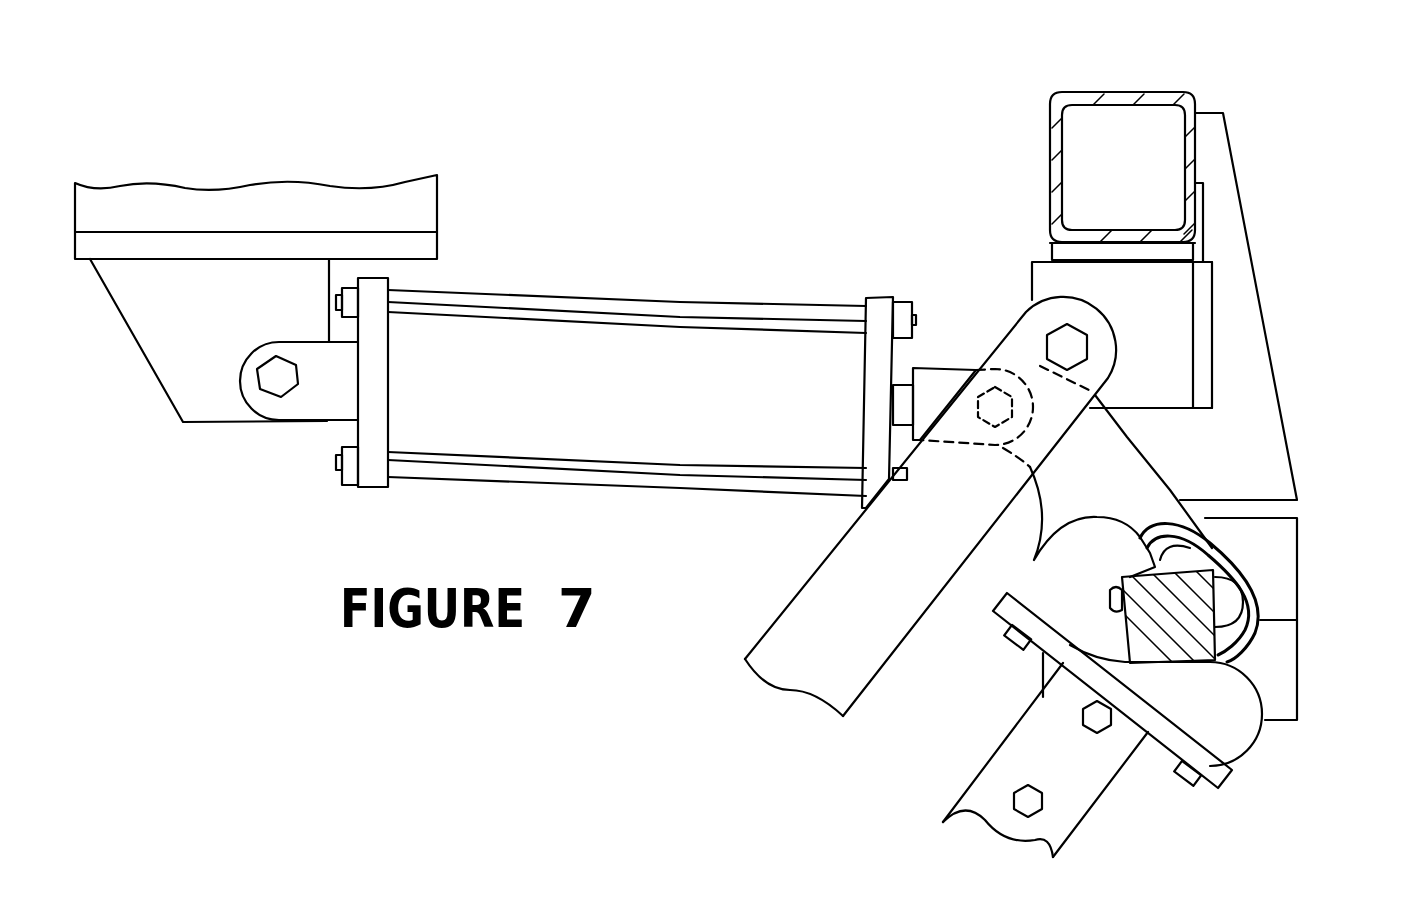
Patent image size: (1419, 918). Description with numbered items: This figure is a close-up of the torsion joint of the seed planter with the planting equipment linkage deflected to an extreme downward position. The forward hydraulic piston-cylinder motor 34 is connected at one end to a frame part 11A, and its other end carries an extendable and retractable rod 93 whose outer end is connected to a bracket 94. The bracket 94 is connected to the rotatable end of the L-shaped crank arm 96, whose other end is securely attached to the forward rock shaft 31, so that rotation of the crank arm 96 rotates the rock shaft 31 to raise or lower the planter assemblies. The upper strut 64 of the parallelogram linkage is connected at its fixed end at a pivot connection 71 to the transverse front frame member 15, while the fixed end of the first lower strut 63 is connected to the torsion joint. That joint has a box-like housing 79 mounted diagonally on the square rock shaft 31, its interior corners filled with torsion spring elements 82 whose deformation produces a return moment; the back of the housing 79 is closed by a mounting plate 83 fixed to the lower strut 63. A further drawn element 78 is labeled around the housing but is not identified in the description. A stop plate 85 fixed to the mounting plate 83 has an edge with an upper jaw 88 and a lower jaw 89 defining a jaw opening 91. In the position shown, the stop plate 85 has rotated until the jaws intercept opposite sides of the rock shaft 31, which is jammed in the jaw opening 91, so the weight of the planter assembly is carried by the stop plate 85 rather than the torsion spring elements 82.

The frame part 11A is at (220, 402).
The forward hydraulic piston-cylinder motor 34 is at (493, 345).
The rod 93 is at (898, 403).
The bracket 94 is at (927, 380).
The pivot connection 71 is at (1063, 338).
The front frame member 15 is at (1190, 93).
The L-shaped crank arm 96 is at (1130, 452).
The upper jaw 88 is at (1097, 537).
The clamp band 78 is at (1222, 547).
The torsion spring elements 82 is at (1228, 607).
The box-like housing 79 is at (1250, 633).
The forward rock shaft 31 is at (1240, 660).
The lower jaw 89 is at (1237, 742).
The mounting plate 83 is at (1205, 790).
The upper strut 64 is at (838, 582).
The stop plate 85 is at (1037, 567).
The jaw opening 91 is at (1113, 607).
The first lower strut 63 is at (965, 813).